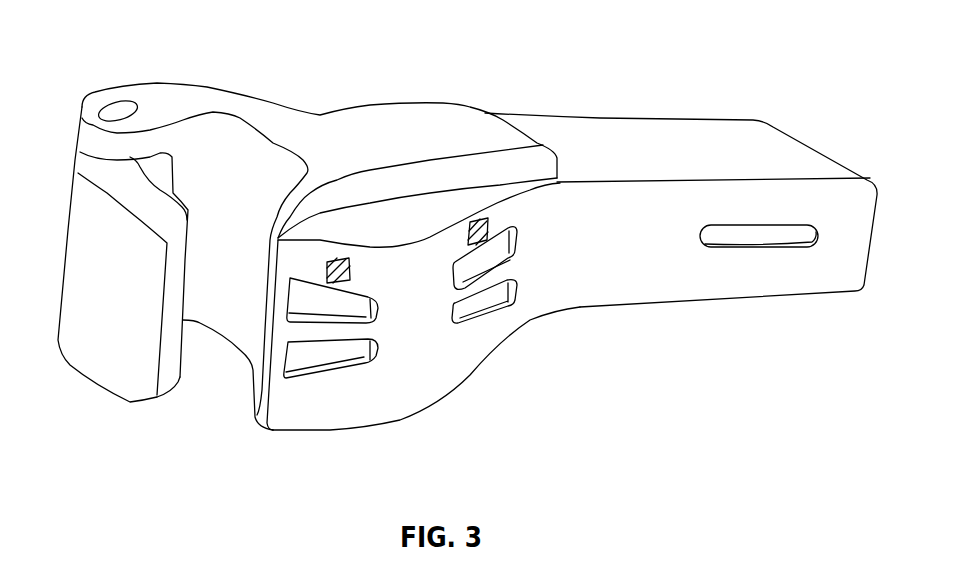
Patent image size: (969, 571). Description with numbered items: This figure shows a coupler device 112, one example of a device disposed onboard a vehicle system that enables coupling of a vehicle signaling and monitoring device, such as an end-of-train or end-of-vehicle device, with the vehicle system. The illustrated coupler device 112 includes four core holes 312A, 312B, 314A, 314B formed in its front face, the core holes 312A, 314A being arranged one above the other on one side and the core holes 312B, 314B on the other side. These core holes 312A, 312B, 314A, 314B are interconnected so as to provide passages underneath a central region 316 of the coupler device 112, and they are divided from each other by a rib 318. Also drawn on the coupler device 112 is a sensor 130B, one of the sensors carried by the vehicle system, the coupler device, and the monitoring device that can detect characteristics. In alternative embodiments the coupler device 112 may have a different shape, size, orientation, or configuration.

The coupler device 112 is at (529, 68).
The sensor 130B is at (340, 260).
The core hole 312A is at (307, 303).
The core hole 312B is at (487, 262).
The core hole 314A is at (347, 355).
The core hole 314B is at (477, 308).
The central region 316 is at (440, 343).
The rib 318 is at (330, 332).